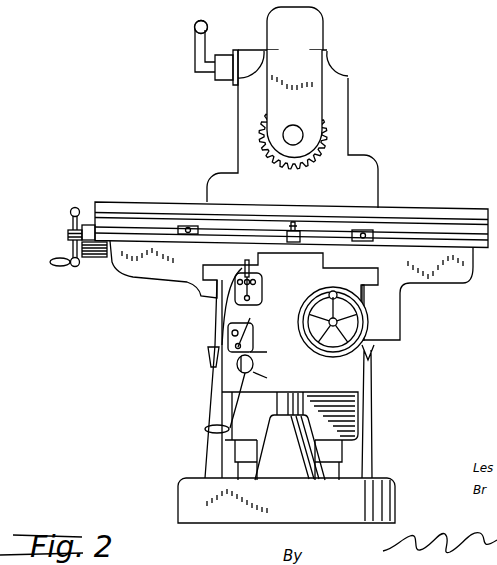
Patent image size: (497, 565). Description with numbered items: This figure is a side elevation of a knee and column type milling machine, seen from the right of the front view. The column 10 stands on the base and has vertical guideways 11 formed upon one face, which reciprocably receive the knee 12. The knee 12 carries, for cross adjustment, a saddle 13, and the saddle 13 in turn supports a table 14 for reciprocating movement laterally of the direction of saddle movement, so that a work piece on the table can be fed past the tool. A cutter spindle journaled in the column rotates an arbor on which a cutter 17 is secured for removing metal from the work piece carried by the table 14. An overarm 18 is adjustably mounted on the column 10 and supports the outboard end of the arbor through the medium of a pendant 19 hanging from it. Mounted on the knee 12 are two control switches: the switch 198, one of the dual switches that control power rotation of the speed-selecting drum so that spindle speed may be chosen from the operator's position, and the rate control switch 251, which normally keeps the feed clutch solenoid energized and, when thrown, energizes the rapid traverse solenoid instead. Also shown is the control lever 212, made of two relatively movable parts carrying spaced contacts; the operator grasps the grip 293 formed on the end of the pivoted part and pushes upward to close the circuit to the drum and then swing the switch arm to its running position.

The column 10 is at (364, 443).
The vertical guideways 11 is at (245, 128).
The knee 12 is at (362, 392).
The saddle 13 is at (434, 283).
The table 14 is at (462, 210).
The cutter 17 is at (323, 133).
The overarm 18 is at (322, 31).
The pendant 19 is at (313, 105).
The switch 198 is at (222, 334).
The control lever 212 is at (208, 27).
The rate control switch 251 is at (208, 327).
The grip 293 is at (195, 27).